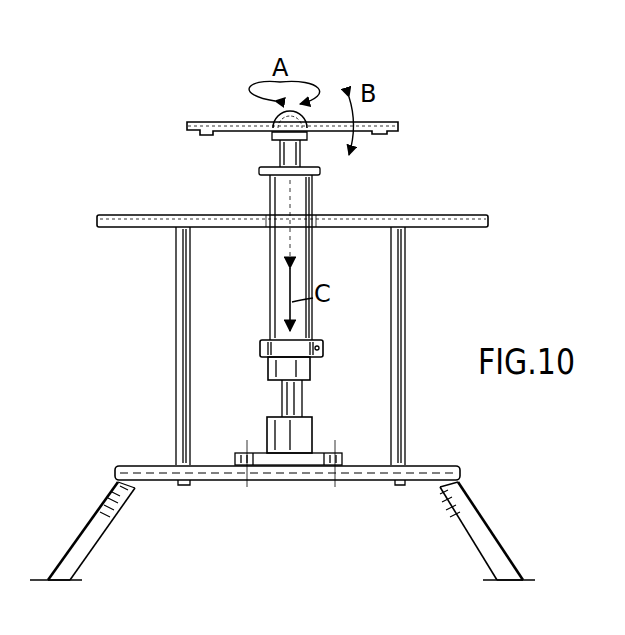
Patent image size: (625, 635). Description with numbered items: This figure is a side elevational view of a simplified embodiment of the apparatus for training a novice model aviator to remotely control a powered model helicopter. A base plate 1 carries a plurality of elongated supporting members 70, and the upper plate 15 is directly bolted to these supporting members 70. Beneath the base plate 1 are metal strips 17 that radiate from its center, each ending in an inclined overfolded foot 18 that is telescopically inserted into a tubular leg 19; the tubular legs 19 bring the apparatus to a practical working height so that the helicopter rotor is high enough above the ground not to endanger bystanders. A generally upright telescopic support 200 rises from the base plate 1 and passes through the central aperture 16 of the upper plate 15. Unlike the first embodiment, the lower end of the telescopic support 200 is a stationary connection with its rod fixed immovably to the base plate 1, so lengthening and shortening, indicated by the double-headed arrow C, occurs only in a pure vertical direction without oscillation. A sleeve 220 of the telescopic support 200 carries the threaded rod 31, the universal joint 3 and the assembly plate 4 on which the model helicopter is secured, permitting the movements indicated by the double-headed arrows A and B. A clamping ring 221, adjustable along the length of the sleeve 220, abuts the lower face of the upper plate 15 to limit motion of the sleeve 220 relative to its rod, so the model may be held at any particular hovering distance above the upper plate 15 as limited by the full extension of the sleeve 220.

The base plate 1 is at (355, 482).
The universal joint 3 is at (300, 116).
The assembly plate 4 is at (228, 122).
The upper plate 15 is at (455, 215).
The central aperture 16 is at (268, 214).
The metal strips 17 is at (378, 482).
The overfolded foot 18 is at (125, 509).
The tubular legs 19 is at (90, 541).
The threaded rod 31 is at (281, 151).
The elongated supporting members 70 is at (176, 343).
The telescopic support 200 is at (295, 331).
The sleeve 220 is at (312, 201).
The clamping ring 221 is at (264, 356).